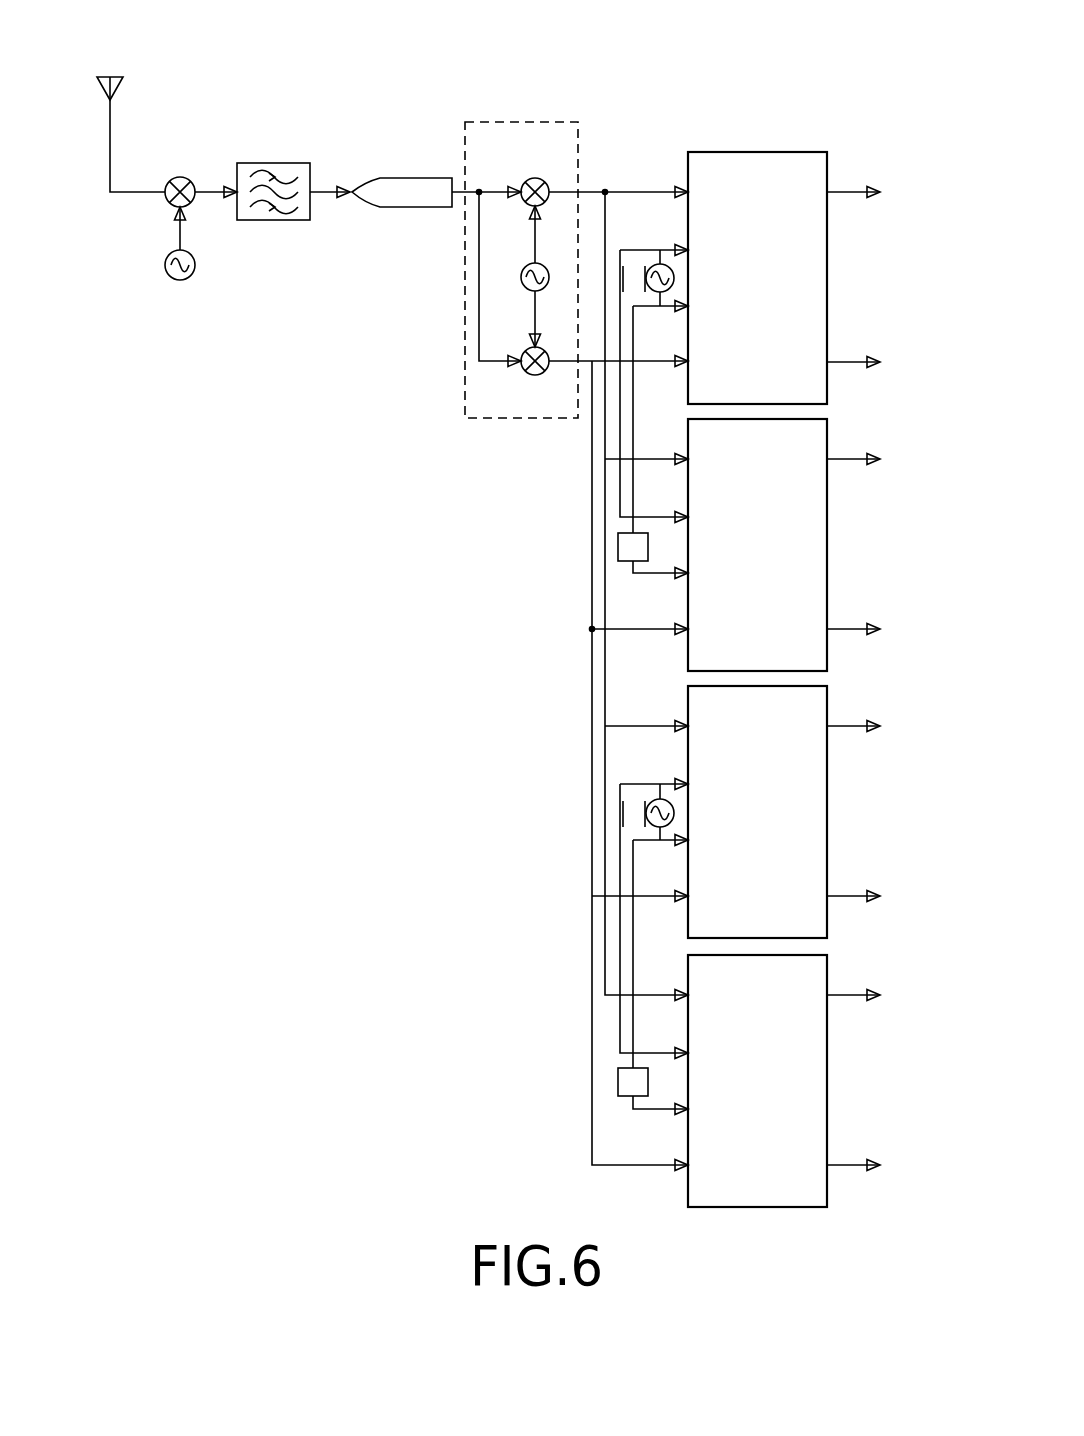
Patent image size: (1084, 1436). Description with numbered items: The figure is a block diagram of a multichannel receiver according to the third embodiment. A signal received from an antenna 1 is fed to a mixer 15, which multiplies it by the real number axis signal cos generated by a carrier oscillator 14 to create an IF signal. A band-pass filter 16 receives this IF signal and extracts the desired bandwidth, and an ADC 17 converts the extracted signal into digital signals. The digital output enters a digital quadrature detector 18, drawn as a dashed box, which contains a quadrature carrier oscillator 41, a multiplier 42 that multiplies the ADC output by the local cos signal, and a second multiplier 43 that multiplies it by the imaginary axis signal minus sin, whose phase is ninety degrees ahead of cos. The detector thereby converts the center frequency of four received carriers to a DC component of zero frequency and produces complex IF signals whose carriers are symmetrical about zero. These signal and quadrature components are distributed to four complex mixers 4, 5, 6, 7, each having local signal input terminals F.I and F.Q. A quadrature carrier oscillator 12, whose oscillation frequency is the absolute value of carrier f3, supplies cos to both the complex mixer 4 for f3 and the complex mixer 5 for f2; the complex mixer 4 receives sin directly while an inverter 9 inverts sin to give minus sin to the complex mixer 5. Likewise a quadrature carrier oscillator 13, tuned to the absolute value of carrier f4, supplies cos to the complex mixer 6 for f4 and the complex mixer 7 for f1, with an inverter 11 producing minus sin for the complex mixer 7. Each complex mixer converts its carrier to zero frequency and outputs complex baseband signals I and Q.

The antenna 1 is at (110, 70).
The mixer 15 is at (189, 178).
The carrier oscillator 14 is at (192, 257).
The band-pass filter 16 is at (272, 162).
The ADC 17 is at (413, 178).
The digital quadrature detector 18 is at (513, 121).
The quadrature carrier oscillator 41 is at (544, 267).
The multiplier 42 is at (544, 181).
The second multiplier 43 is at (544, 347).
The complex mixer 4 is at (827, 276).
The complex mixer 5 is at (827, 543).
The complex mixer 6 is at (827, 810).
The complex mixer 7 is at (827, 1079).
The quadrature carrier oscillator 12 is at (676, 278).
The quadrature carrier oscillator 13 is at (676, 814).
The inverter 9 is at (627, 563).
The inverter 11 is at (627, 1099).